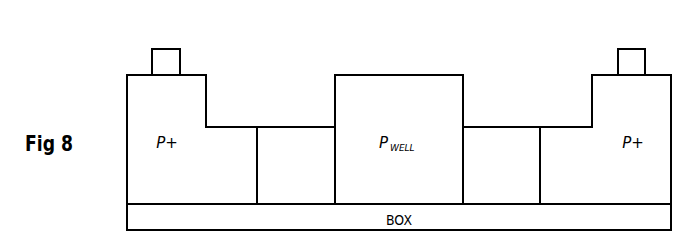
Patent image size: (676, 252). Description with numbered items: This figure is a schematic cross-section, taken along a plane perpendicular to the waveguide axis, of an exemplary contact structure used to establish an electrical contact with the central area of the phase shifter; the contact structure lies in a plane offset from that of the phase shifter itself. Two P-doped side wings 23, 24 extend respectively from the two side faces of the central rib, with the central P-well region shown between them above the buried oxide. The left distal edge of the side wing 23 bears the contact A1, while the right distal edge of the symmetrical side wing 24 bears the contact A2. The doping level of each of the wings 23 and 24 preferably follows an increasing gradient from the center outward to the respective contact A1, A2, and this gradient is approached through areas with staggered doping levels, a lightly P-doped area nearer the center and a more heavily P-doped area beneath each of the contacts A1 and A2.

The P-doped side wing 23 is at (263, 91).
The P-doped side wing 24 is at (536, 92).
The contact A1 is at (166, 50).
The contact A2 is at (631, 50).